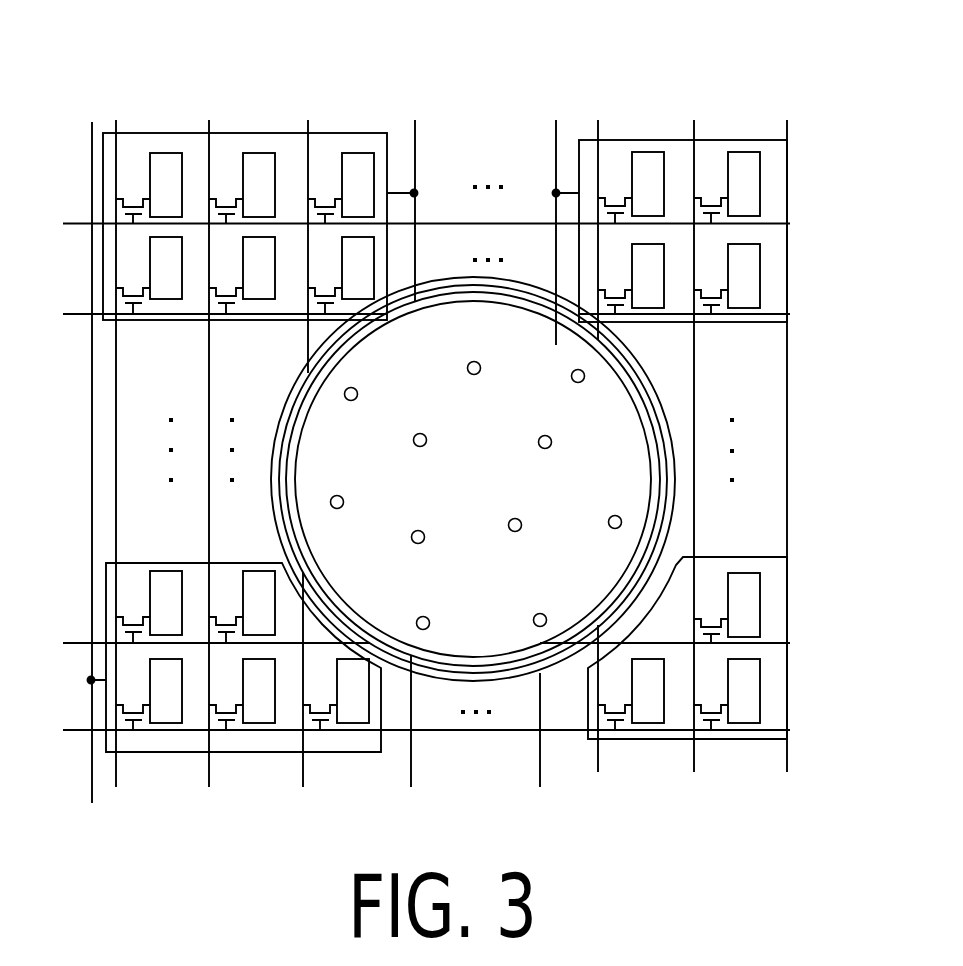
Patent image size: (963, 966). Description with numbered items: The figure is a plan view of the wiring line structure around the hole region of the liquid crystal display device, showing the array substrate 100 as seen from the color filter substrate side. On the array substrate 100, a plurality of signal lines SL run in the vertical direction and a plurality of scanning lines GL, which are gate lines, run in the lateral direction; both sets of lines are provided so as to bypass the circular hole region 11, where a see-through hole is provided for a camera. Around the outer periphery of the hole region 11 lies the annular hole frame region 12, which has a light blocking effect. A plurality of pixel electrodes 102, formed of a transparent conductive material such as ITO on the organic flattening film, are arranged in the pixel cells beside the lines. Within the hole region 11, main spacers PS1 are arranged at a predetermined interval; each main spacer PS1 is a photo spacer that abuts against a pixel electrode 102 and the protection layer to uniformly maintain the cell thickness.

The array substrate 100 is at (340, 84).
The pixel electrode 102 is at (145, 132).
The hole frame region 12 is at (523, 280).
The hole region 11 is at (646, 513).
The main spacer PS1 is at (351, 401).
The signal line SL is at (438, 446).
The scanning line GL is at (411, 477).